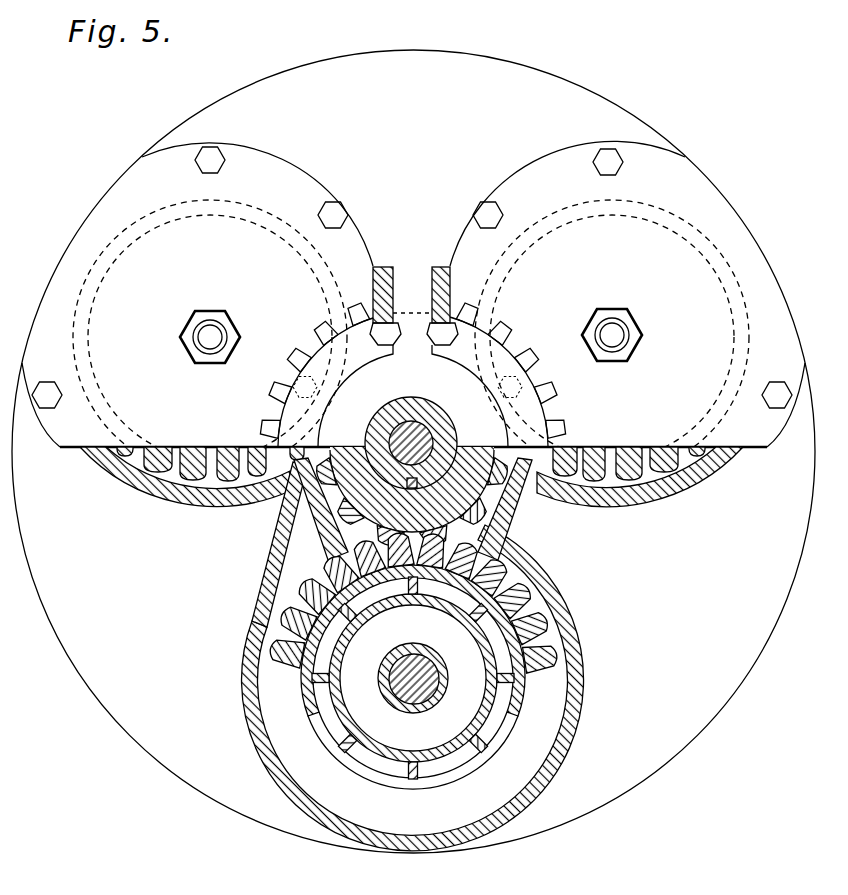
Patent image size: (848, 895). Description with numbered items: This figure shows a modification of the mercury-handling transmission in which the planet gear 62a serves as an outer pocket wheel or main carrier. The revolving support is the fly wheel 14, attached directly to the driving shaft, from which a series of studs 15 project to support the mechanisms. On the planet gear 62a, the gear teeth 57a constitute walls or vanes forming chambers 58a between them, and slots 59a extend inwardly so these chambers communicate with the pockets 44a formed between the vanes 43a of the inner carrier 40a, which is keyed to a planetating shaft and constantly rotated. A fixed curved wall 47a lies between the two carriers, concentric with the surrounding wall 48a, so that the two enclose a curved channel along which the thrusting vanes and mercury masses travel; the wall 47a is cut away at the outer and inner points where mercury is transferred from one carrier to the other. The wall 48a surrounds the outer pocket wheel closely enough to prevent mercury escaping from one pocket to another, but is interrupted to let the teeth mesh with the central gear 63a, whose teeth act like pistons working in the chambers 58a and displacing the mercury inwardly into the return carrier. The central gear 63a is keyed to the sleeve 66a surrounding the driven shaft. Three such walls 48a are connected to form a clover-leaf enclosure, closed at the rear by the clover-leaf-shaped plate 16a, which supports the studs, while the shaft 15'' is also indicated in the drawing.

The fly wheel 14 is at (413, 451).
The clover-leaf-shaped plate 16a is at (305, 190).
The studs 15 is at (428, 324).
The outer wall 48a is at (287, 580).
The central gear 63a is at (491, 513).
The sleeve 66a is at (447, 432).
The inner wall 47a is at (297, 703).
The slots 59a is at (530, 645).
The planet gear 62a is at (278, 630).
The gear teeth 57a is at (535, 580).
The chambers 58a is at (535, 607).
The pockets 44a is at (447, 583).
The vanes 43a is at (417, 775).
The inner carrier 40a is at (380, 668).
The shaft 15'' is at (426, 699).